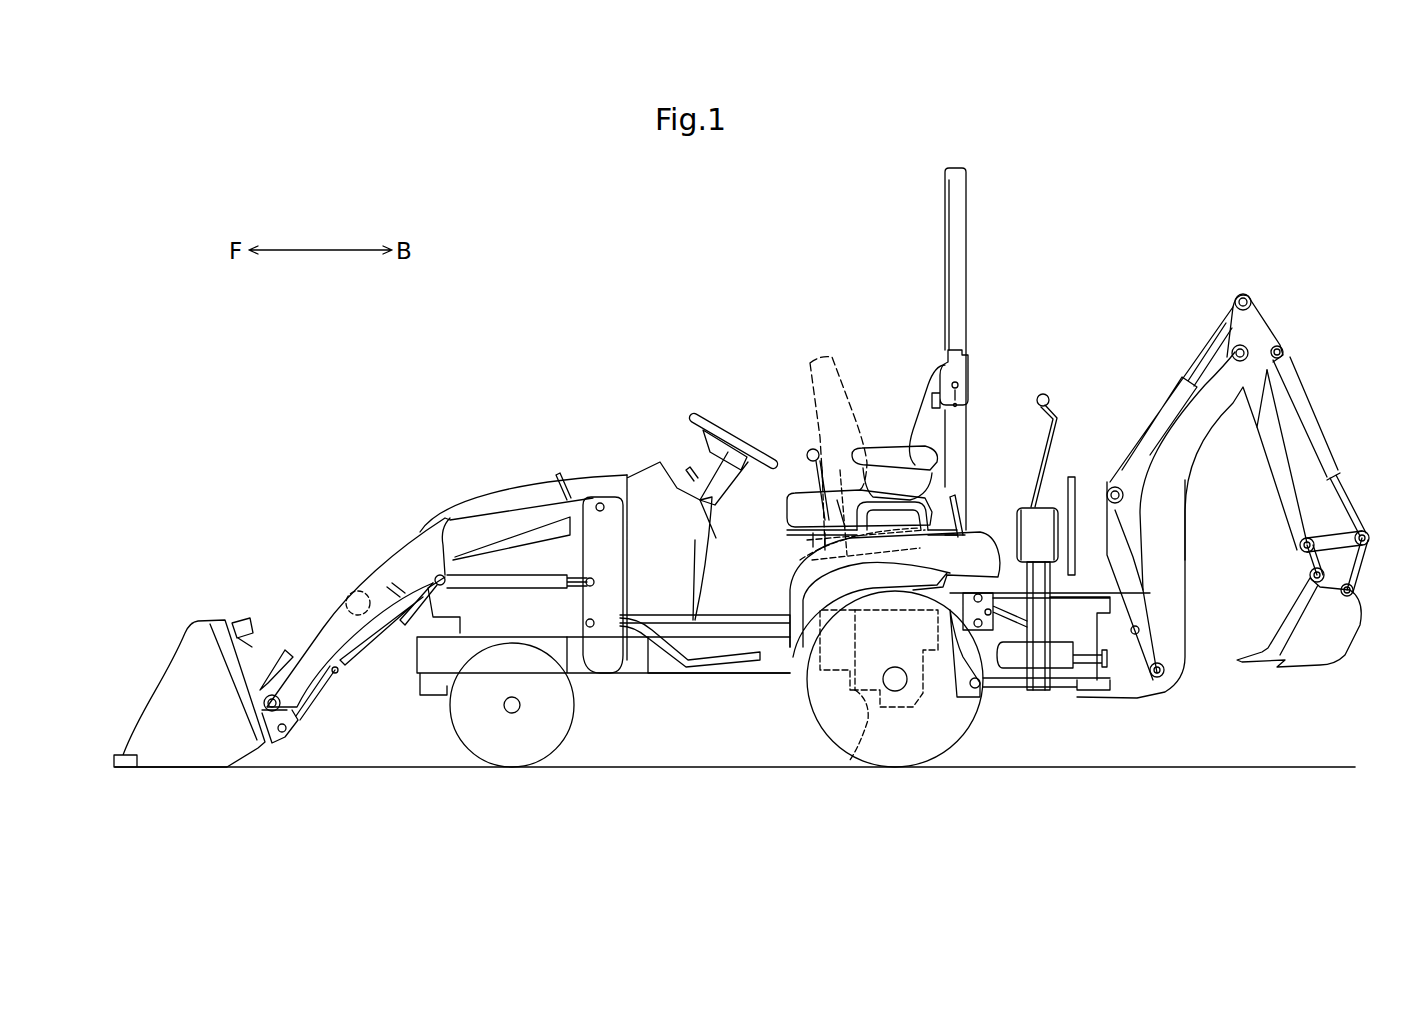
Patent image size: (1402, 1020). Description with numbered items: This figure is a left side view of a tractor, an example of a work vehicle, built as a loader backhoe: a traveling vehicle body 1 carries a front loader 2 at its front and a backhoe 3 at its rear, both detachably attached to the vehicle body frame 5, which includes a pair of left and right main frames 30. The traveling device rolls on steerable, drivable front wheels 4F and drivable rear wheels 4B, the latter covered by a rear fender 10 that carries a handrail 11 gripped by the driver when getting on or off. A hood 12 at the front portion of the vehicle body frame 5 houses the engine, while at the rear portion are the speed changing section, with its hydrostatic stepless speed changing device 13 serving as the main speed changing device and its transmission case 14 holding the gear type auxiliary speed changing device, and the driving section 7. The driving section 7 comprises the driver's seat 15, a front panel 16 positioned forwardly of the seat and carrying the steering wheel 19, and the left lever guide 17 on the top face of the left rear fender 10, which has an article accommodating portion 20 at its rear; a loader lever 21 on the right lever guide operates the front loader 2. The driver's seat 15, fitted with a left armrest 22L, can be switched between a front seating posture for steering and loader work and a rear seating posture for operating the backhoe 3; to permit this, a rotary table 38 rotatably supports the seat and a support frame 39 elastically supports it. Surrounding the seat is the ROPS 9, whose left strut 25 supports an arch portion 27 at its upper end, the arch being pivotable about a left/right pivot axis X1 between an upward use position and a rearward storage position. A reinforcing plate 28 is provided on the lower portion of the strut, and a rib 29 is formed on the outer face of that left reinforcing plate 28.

The traveling vehicle body 1 is at (625, 432).
The front loader 2 is at (283, 557).
The backhoe 3 is at (1276, 268).
The front wheels 4F is at (510, 768).
The rear wheels 4B is at (897, 762).
The vehicle body frame 5 is at (673, 685).
The driving section 7 is at (735, 393).
The ROPS 9 is at (961, 163).
The rear fender 10 is at (990, 553).
The handrail 11 is at (850, 513).
The hood 12 is at (508, 495).
The hydrostatic stepless speed changing device 13 is at (832, 672).
The transmission case 14 is at (875, 708).
The driver's seat 15 is at (840, 377).
The front panel 16 is at (697, 557).
The left lever guide 17 is at (793, 573).
The steering wheel 19 is at (730, 440).
The article accommodating portion 20 is at (938, 473).
The loader lever 21 is at (808, 455).
The left armrest 22L is at (888, 450).
The left strut 25 is at (965, 440).
The arch portion 27 is at (948, 257).
The reinforcing plate 28 is at (965, 478).
The rib 29 is at (965, 487).
The main frames 30 is at (742, 667).
The rotary table 38 is at (830, 496).
The support frame 39 is at (896, 658).
The pivot axis X1 is at (957, 383).